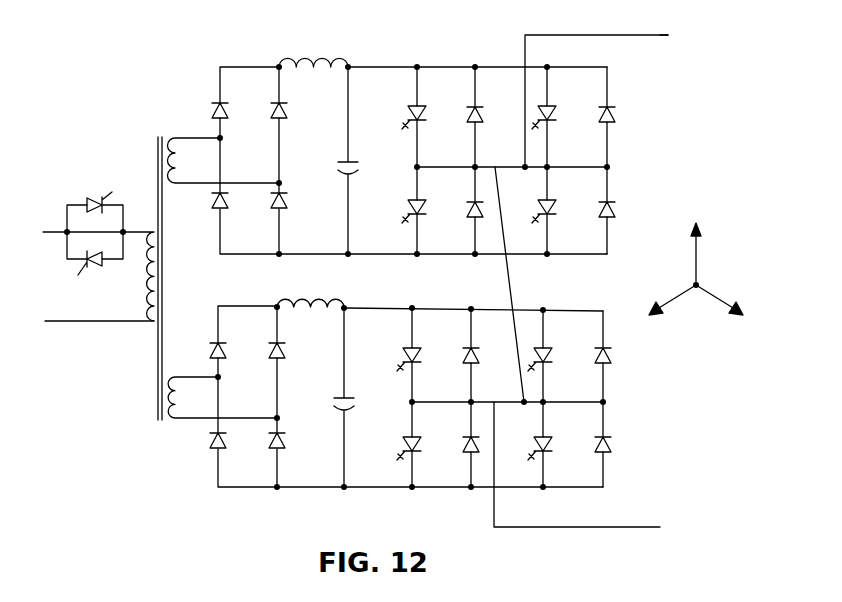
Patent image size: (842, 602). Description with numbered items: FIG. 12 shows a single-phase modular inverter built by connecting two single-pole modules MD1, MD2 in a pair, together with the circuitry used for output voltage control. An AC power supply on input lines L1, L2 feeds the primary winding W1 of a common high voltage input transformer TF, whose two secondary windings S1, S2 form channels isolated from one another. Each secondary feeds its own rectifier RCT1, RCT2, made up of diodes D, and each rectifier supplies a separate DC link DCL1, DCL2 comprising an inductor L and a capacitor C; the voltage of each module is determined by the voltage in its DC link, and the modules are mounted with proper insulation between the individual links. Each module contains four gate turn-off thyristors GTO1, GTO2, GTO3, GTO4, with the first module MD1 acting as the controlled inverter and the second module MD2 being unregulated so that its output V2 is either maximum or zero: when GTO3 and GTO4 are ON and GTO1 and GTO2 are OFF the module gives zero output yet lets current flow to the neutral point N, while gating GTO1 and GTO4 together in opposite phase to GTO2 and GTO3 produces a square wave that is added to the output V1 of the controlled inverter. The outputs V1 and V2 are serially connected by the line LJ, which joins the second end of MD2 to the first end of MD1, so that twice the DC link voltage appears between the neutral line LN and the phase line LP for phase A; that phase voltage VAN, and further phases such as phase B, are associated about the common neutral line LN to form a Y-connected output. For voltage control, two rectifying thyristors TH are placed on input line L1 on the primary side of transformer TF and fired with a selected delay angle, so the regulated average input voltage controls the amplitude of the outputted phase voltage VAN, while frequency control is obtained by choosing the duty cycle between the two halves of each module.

The rectifying thyristors TH is at (110, 185).
The input line L1 is at (46, 229).
The input line L2 is at (64, 323).
The primary winding W1 is at (145, 297).
The input transformer TF is at (146, 448).
The secondary winding S1 is at (191, 218).
The secondary winding S2 is at (188, 361).
The rectifier RCT1 is at (270, 37).
The rectifier RCT2 is at (268, 512).
The DC link DCL1 is at (334, 37).
The DC link DCL2 is at (334, 512).
The inductor L is at (312, 199).
The diode D is at (228, 107).
The capacitor C is at (358, 172).
The gate turn-off thyristor GTO1 is at (409, 111).
The gate turn-off thyristor GTO2 is at (555, 112).
The gate turn-off thyristor GTO3 is at (410, 213).
The gate turn-off thyristor GTO4 is at (555, 211).
The module MD1 is at (652, 183).
The module MD2 is at (654, 417).
The phase line LP is at (555, 34).
The phase A is at (641, 34).
The outputted phase voltage VAN is at (683, 41).
The output voltage of module MD1 V1 is at (524, 166).
The output voltage of module MD2 V2 is at (523, 401).
The joining line LJ is at (507, 274).
The neutral line LN is at (573, 529).
The neutral point N is at (674, 544).
The phase B is at (702, 277).